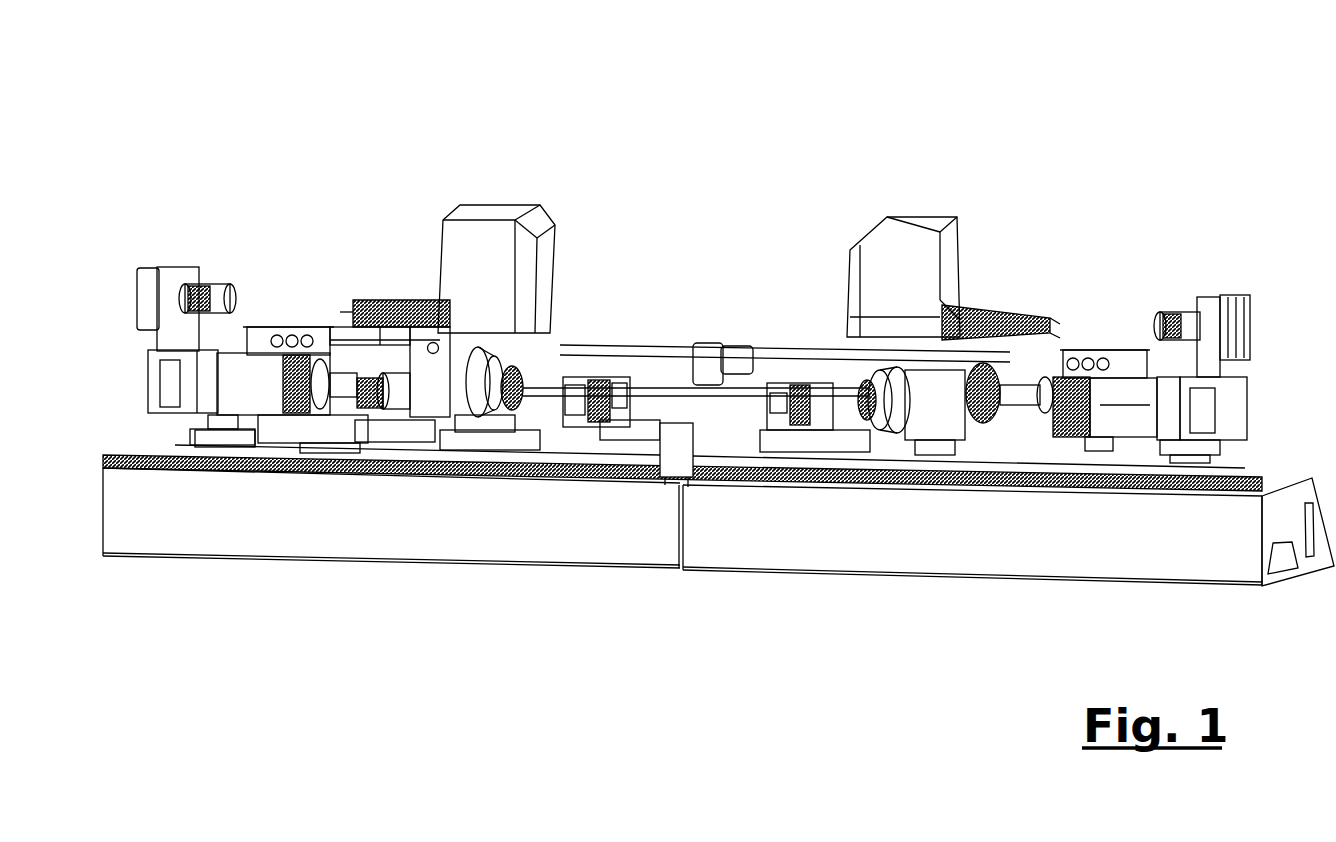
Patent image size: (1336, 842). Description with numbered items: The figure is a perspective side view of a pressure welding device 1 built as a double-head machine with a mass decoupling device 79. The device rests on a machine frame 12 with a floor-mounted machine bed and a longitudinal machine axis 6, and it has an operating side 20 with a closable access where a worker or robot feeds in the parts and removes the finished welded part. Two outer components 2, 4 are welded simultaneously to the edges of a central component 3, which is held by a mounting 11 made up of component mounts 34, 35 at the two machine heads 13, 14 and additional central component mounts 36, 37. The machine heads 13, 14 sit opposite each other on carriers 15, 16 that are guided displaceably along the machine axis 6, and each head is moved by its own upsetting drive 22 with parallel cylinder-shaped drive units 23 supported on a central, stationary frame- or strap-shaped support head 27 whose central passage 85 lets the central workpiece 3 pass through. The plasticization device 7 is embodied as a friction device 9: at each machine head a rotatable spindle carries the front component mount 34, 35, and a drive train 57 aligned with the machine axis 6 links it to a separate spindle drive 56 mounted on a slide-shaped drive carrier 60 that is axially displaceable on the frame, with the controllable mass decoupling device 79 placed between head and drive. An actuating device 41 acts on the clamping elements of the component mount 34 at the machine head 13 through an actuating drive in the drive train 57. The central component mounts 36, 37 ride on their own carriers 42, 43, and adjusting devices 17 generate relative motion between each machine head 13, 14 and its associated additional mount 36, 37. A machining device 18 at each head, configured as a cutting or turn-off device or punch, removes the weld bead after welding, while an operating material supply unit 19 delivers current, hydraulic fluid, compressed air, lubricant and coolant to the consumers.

The pressure welding device 1 is at (945, 178).
The outer component 2 is at (548, 383).
The central component 3 is at (678, 382).
The outer component 4 is at (845, 385).
The machine axis 6 is at (1138, 400).
The plasticization device 7 is at (525, 370).
The friction device 9 is at (935, 505).
The mounting 11 is at (688, 322).
The machine frame 12 is at (633, 540).
The machine head 13 is at (424, 305).
The machine head 14 is at (962, 345).
The carrier 15 is at (363, 468).
The carrier 16 is at (980, 490).
The adjusting device 17 is at (468, 477).
The machining device 18 is at (543, 262).
The operating material supply unit 19 is at (133, 376).
The operating side 20 is at (462, 542).
The upsetting drive 22 is at (936, 506).
The drive unit 23 is at (287, 468).
The support head 27 is at (720, 340).
The component mount 34 is at (505, 458).
The component mount 35 is at (865, 488).
The additional component mount 36 is at (605, 378).
The additional component mount 37 is at (795, 380).
The actuating device 41 is at (352, 376).
The carrier 42 is at (548, 482).
The carrier 43 is at (830, 490).
The spindle drive 56 is at (251, 388).
The drive train 57 is at (1040, 375).
The drive carrier 60 is at (230, 466).
The mass decoupling device 79 is at (337, 462).
The central passage 85 is at (723, 470).